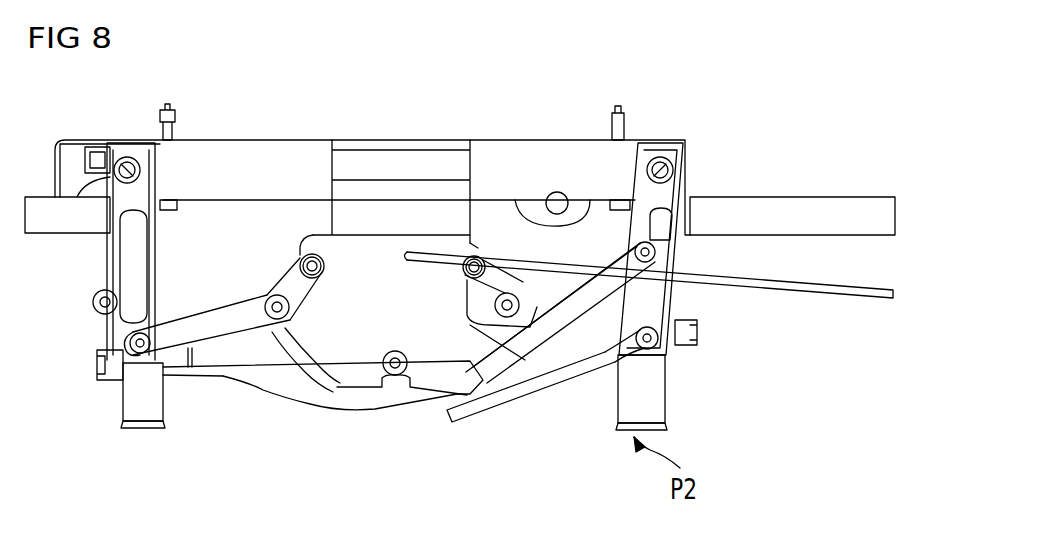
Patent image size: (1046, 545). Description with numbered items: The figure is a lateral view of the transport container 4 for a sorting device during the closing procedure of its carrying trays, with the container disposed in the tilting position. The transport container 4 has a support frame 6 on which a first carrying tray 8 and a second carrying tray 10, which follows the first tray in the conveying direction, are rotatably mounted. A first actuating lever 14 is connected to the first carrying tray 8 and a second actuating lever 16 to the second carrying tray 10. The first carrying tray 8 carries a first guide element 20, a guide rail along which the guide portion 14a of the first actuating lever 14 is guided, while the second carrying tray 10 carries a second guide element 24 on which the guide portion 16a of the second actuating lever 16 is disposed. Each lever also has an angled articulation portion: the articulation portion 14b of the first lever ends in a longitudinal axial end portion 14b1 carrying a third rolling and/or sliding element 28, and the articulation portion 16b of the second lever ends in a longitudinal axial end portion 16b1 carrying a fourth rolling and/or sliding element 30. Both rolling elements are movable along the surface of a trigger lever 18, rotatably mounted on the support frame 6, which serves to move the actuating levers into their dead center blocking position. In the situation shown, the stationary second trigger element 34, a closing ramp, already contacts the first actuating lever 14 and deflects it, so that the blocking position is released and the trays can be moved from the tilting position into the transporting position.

The transport container 4 is at (407, 118).
The second guide element 24 is at (112, 252).
The first guide element 20 is at (652, 300).
The second carrying tray 10 is at (123, 417).
The first carrying tray 8 is at (665, 378).
The second actuating lever 16 is at (192, 347).
The guide portion 16a is at (203, 325).
The articulation portion 16b is at (316, 308).
The fourth rolling and/or sliding element 30 is at (305, 262).
The longitudinal axial end portion 16b1 is at (312, 266).
The support frame 6 is at (217, 350).
The third rolling and/or sliding element 28 is at (467, 270).
The longitudinal axial end portion 14b1 is at (474, 267).
The first actuating lever 14 is at (520, 330).
The guide portion 14a is at (540, 300).
The articulation portion 14b is at (473, 287).
The trigger lever 18 is at (483, 378).
The second trigger element 34 is at (797, 289).